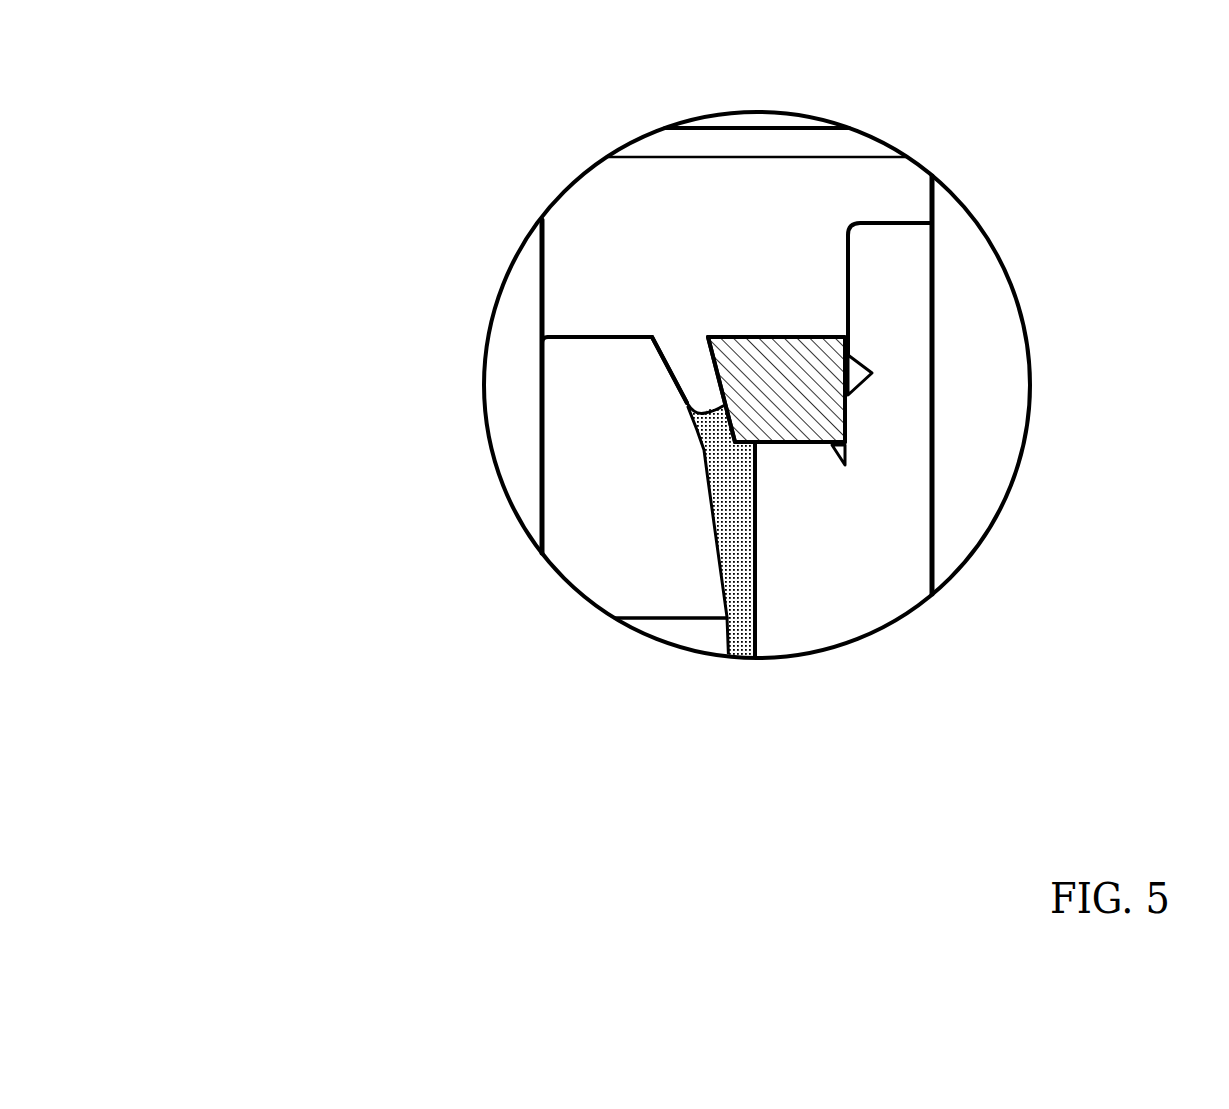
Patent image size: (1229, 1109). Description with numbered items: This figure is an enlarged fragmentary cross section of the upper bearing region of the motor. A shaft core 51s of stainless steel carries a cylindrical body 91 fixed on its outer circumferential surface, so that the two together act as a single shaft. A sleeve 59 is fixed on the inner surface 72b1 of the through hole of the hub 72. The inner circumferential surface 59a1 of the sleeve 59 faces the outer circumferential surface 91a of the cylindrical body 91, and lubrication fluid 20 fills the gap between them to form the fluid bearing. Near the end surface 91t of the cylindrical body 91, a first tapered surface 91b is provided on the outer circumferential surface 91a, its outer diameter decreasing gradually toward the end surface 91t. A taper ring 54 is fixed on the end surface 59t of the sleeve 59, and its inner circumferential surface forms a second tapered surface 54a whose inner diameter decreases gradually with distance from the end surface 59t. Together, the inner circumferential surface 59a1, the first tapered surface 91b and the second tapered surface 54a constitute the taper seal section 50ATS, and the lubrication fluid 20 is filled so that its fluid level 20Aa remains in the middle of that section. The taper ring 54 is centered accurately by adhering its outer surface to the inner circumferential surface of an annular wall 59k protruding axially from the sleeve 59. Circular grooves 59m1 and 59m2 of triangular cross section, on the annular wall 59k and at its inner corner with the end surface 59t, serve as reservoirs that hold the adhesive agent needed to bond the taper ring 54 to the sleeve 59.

The lubrication fluid 20 is at (737, 475).
The fluid level 20Aa is at (708, 412).
The taper seal section 50ATS is at (683, 357).
The shaft core 51s is at (515, 458).
The taper ring 54 is at (780, 350).
The second tapered surface 54a is at (712, 352).
The sleeve 59 is at (867, 533).
The inner circumferential surface 59a1 is at (758, 585).
The annular wall 59k is at (888, 253).
The circular groove 59m1 is at (877, 375).
The circular groove 59m2 is at (850, 448).
The end surface 59t is at (787, 447).
The hub 72 is at (978, 328).
The inner surface 72b1 is at (933, 298).
The cylindrical body 91 is at (633, 563).
The outer circumferential surface 91a is at (725, 635).
The first tapered surface 91b is at (662, 361).
The end surface 91t is at (600, 333).